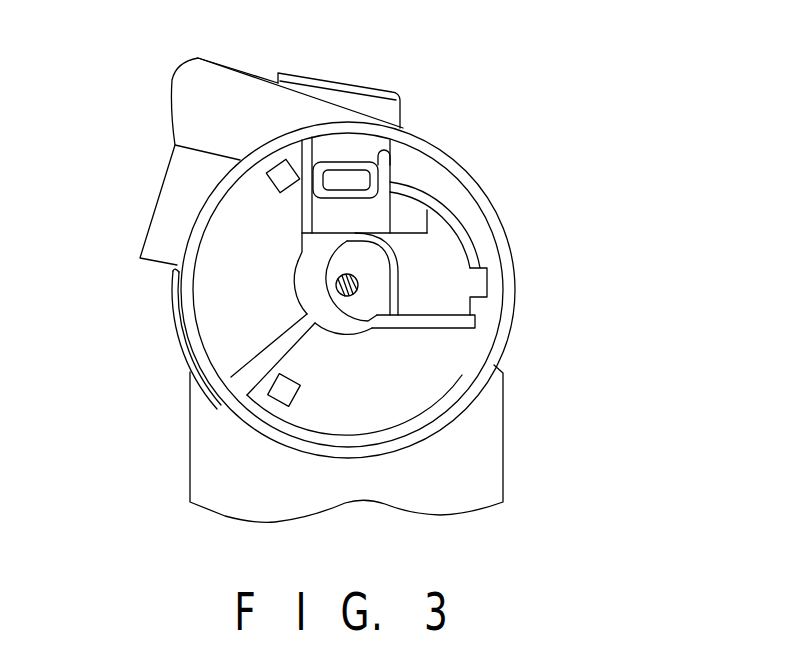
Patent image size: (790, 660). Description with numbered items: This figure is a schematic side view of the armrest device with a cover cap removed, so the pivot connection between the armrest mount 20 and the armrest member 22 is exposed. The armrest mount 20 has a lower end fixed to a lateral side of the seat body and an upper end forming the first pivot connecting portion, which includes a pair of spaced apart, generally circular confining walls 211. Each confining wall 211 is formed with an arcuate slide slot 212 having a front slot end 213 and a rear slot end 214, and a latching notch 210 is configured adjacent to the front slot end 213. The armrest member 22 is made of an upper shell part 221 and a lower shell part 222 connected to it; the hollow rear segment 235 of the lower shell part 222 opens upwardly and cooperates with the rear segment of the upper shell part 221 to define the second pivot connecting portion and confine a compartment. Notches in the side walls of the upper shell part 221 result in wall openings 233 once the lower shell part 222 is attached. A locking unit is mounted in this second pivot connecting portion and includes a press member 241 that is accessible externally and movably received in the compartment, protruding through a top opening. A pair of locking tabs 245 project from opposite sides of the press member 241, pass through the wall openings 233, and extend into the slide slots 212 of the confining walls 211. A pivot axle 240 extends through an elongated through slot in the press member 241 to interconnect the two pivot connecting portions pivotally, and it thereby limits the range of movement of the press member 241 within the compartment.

The armrest mount 20 is at (483, 472).
The armrest member 22 is at (152, 131).
The upper shell part 221 is at (257, 108).
The lower shell part 222 is at (162, 250).
The press member 241 is at (380, 91).
The latching notch 210 is at (382, 175).
The confining wall 211 is at (508, 287).
The slide slot 212 is at (449, 264).
The front slot end 213 is at (309, 221).
The rear slot end 214 is at (422, 332).
The wall opening 233 is at (392, 211).
The rear segment of the lower shell part 235 is at (437, 300).
The pivot axle 240 is at (336, 287).
The locking tab 245 is at (350, 167).